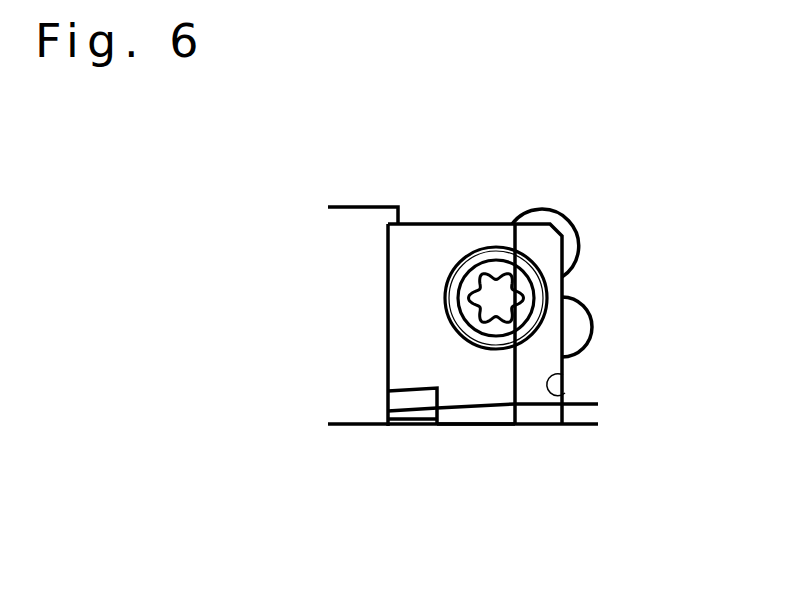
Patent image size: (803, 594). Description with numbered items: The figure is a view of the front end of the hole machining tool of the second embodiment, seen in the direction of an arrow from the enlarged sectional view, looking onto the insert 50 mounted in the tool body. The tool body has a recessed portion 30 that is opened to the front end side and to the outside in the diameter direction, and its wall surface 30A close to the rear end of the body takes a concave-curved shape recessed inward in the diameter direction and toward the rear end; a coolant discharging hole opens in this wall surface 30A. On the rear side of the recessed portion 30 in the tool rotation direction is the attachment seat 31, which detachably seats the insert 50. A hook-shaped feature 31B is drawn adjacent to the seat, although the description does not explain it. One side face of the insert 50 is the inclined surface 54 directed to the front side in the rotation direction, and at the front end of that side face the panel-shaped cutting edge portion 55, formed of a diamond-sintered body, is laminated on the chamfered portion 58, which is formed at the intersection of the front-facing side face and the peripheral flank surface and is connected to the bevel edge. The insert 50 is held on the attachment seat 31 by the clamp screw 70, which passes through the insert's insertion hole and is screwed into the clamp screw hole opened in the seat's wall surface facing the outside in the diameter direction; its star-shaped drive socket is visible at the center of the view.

The recessed portion 30 is at (365, 235).
The wall surface 30A is at (325, 216).
The attachment seat 31 is at (577, 178).
The hook portion 31B is at (565, 393).
The clamp screw 70 is at (537, 263).
The inclined surface 54 is at (385, 380).
The cutting edge portion 55 is at (410, 430).
The chamfered portion 58 is at (475, 420).
The insert 50 is at (475, 472).